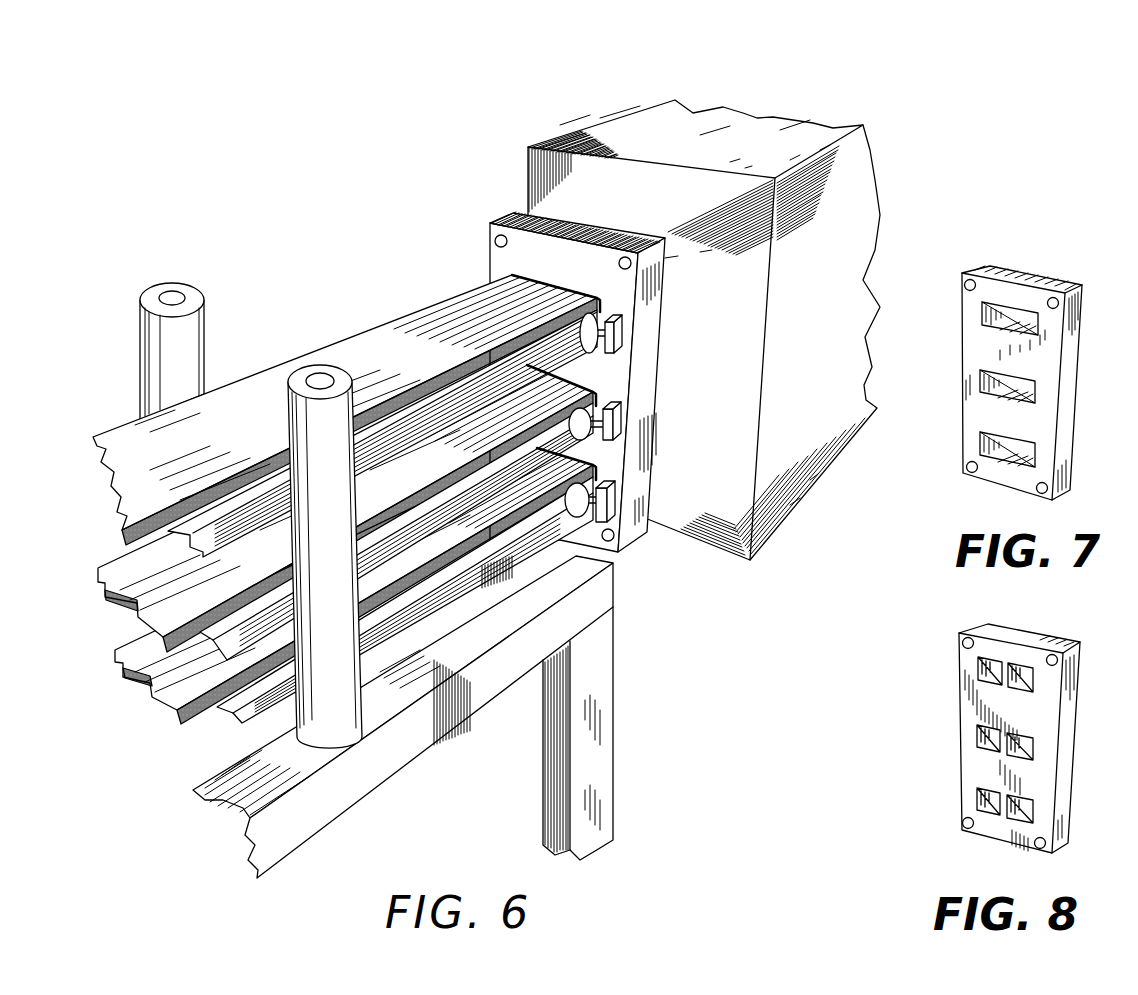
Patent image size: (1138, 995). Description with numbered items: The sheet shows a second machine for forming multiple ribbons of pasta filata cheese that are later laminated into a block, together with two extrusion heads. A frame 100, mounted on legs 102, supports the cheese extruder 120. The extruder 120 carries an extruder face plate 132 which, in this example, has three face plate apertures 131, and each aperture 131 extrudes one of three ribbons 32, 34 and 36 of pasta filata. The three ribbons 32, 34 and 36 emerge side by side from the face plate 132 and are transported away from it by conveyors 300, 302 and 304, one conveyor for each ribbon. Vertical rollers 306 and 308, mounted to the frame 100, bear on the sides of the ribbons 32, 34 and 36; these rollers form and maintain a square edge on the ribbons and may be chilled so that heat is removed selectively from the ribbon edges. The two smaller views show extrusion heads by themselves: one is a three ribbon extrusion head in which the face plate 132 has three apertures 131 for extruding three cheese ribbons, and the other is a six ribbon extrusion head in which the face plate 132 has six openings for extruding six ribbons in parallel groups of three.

In FIG. 6, the ribbon 32 is at (466, 292).
In FIG. 6, the ribbon 34 is at (640, 392).
In FIG. 6, the ribbon 36 is at (557, 533).
In FIG. 6, the frame 100 is at (465, 728).
In FIG. 6, the legs 102 is at (603, 770).
In FIG. 6, the extruder 120 is at (738, 130).
In FIG. 6, the face plate aperture 131 is at (556, 282).
In FIG. 7, the face plate aperture 131 is at (990, 325).
In FIG. 6, the extruder face plate 132 is at (648, 310).
In FIG. 7, the extruder face plate 132 is at (1065, 452).
In FIG. 8, the extruder face plate 132 is at (1065, 766).
In FIG. 6, the conveyor 300 is at (592, 348).
In FIG. 6, the conveyor 302 is at (590, 442).
In FIG. 6, the conveyor 304 is at (600, 490).
In FIG. 6, the vertical roller 306 is at (178, 283).
In FIG. 6, the vertical roller 308 is at (330, 364).